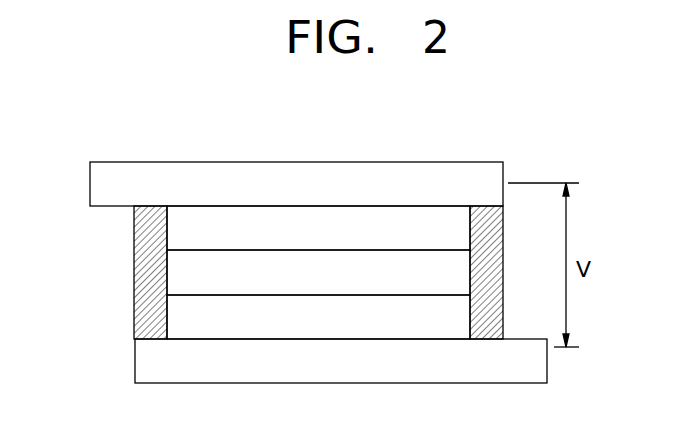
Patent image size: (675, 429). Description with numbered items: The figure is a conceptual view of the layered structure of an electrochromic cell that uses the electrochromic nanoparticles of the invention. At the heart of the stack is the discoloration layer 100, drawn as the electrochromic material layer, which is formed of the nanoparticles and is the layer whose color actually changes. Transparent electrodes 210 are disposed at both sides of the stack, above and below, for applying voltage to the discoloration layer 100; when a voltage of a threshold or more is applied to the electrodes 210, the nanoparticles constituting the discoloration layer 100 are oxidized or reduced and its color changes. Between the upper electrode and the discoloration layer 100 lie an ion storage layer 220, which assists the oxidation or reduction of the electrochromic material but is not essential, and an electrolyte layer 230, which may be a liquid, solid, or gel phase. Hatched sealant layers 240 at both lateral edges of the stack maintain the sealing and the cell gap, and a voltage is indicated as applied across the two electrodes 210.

The electrodes 210 is at (90, 186).
The ion storage layer 220 is at (172, 232).
The electrolyte layer 230 is at (172, 273).
The discoloration layer 100 is at (172, 317).
The sealant layer 240 is at (151, 208).